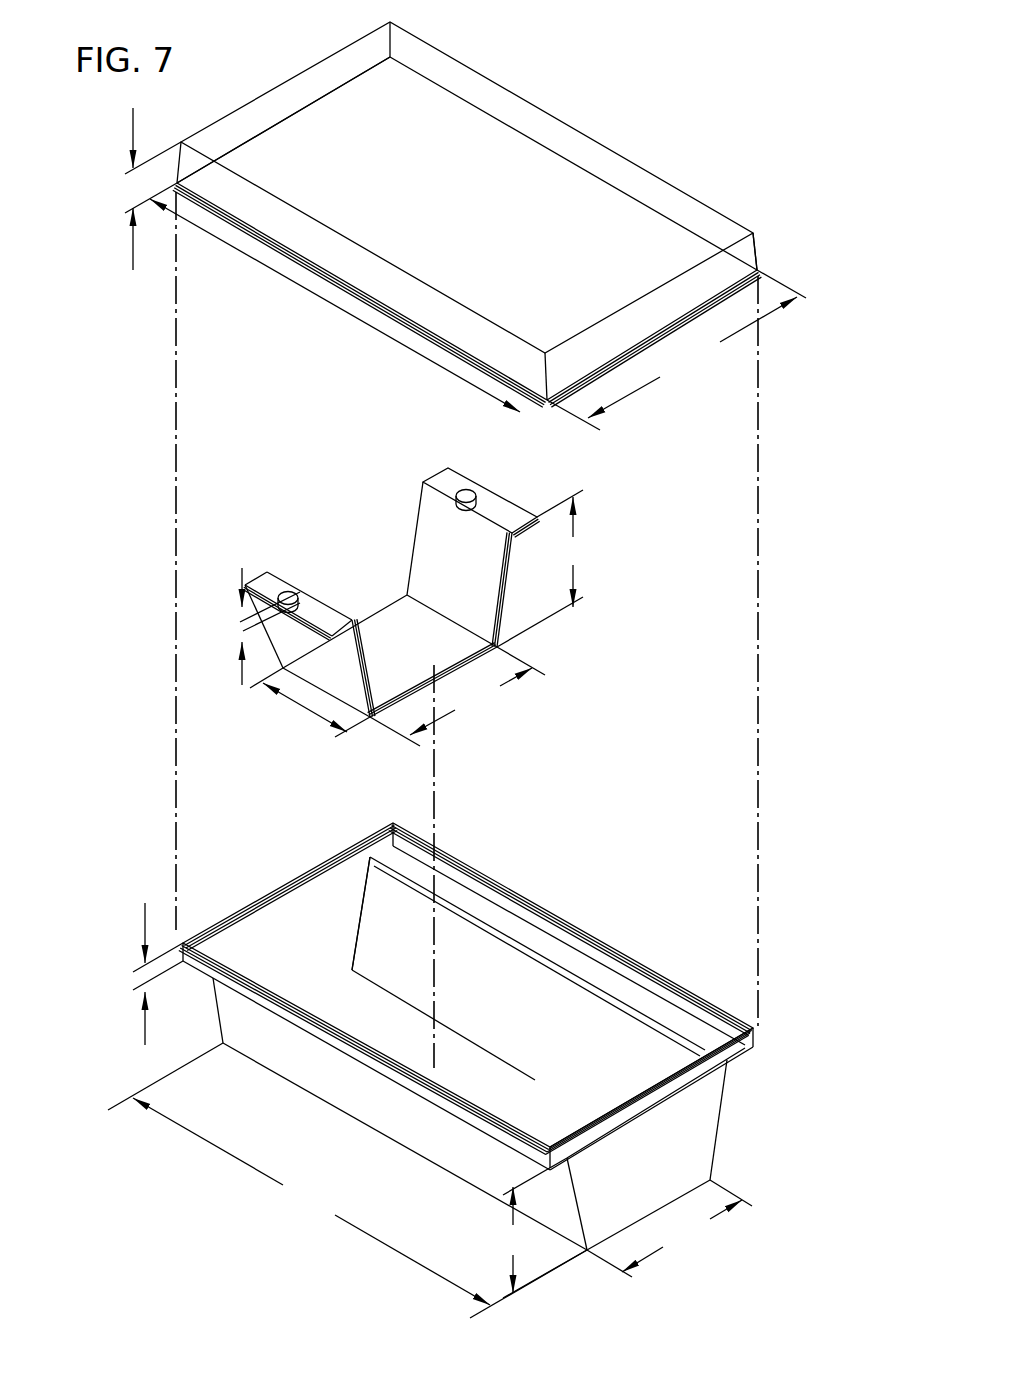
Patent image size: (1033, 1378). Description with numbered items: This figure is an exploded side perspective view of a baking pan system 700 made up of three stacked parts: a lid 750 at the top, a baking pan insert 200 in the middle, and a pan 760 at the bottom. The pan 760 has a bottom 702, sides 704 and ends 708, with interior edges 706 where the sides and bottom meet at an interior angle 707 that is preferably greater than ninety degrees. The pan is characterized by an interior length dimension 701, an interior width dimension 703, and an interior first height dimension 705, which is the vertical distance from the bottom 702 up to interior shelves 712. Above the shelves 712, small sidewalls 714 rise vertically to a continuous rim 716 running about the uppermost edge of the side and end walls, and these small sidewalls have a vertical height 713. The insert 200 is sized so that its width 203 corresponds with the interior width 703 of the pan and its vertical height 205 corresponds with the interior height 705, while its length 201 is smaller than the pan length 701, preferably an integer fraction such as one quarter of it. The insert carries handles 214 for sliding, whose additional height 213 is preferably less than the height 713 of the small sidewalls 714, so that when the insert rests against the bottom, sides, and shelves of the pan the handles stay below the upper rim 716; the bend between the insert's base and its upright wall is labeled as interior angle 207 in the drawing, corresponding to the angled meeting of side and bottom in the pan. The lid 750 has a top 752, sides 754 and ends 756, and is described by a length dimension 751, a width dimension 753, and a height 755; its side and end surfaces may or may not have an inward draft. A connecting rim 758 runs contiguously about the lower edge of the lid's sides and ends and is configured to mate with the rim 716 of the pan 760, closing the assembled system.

The baking pan system 700 is at (100, 515).
The lid 750 is at (633, 124).
The top 752 is at (373, 102).
The sides 754 is at (478, 88).
The length dimension 751 is at (418, 292).
The ends 756 is at (742, 266).
The height 755 is at (128, 190).
The width dimension 753 is at (676, 350).
The connecting rim 758 is at (468, 386).
The baking pan insert 200 is at (614, 552).
The length 201 is at (300, 707).
The additional height 213 is at (238, 628).
The interior angle 207 is at (405, 560).
The width 203 is at (456, 670).
The vertical height 205 is at (499, 564).
The handles 214 is at (478, 496).
The pan 760 is at (549, 888).
The ends 708 is at (328, 878).
The small sidewalls 714 is at (660, 977).
The interior shelves 712 is at (593, 973).
The interior edges 706 is at (455, 1033).
The sides 704 is at (312, 1068).
The bottom 702 is at (490, 1088).
The continuous rim 716 is at (583, 1133).
The interior angle 707 is at (356, 935).
The vertical height 713 is at (140, 987).
The interior first height dimension 705 is at (542, 1228).
The interior width dimension 703 is at (669, 1228).
The interior length dimension 701 is at (347, 1180).